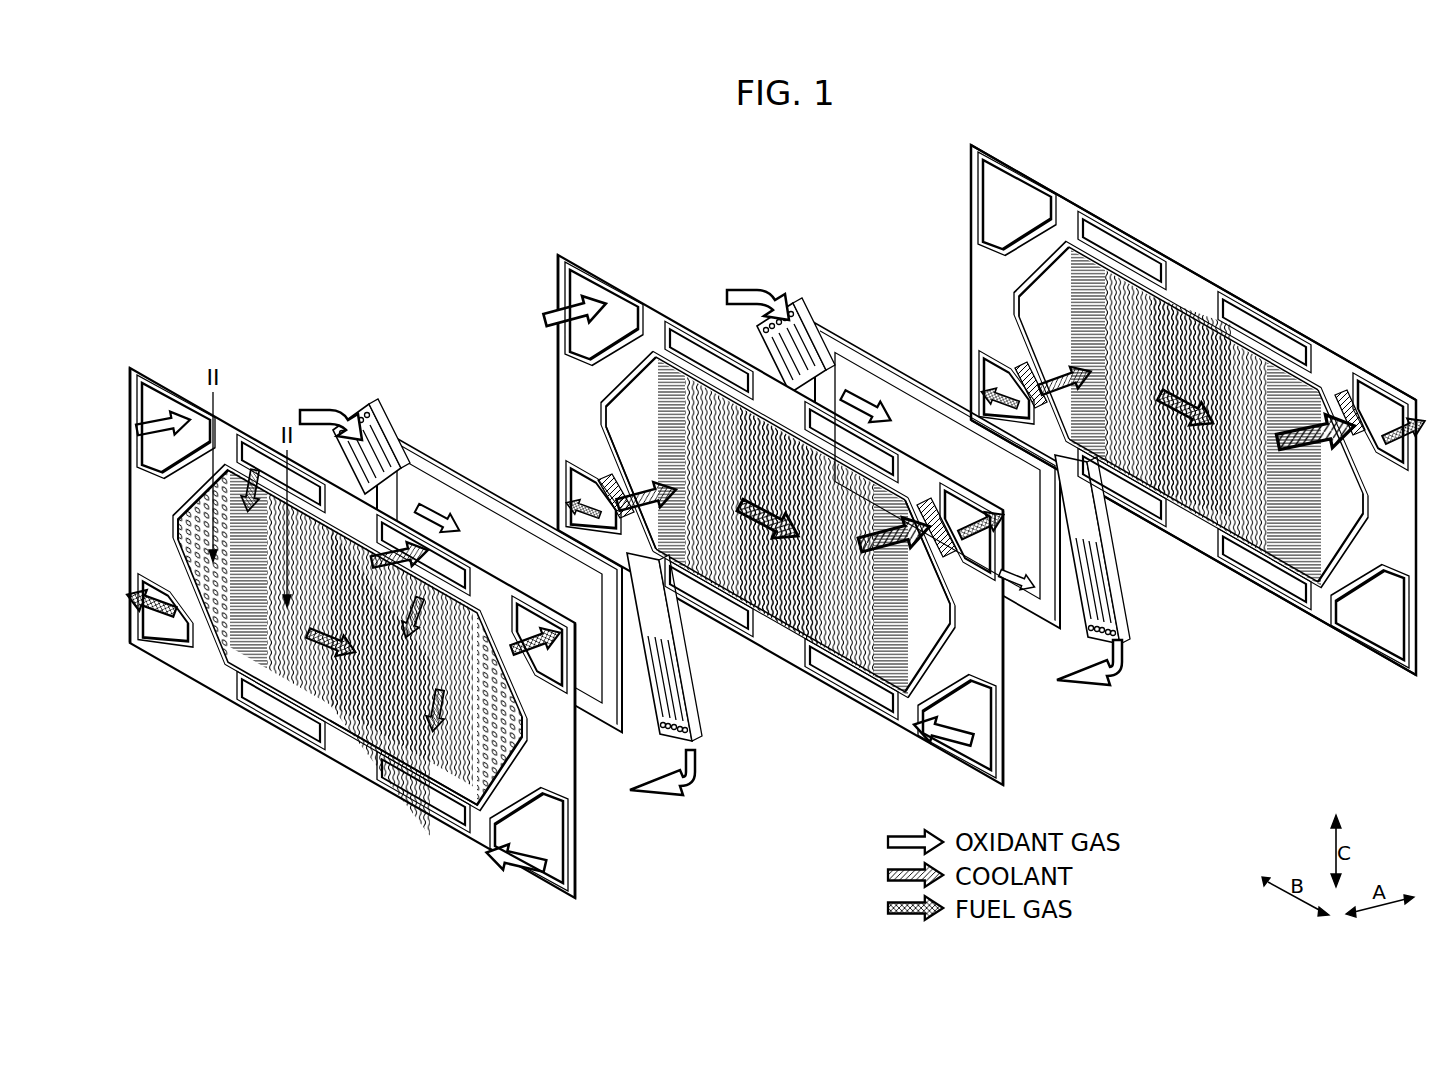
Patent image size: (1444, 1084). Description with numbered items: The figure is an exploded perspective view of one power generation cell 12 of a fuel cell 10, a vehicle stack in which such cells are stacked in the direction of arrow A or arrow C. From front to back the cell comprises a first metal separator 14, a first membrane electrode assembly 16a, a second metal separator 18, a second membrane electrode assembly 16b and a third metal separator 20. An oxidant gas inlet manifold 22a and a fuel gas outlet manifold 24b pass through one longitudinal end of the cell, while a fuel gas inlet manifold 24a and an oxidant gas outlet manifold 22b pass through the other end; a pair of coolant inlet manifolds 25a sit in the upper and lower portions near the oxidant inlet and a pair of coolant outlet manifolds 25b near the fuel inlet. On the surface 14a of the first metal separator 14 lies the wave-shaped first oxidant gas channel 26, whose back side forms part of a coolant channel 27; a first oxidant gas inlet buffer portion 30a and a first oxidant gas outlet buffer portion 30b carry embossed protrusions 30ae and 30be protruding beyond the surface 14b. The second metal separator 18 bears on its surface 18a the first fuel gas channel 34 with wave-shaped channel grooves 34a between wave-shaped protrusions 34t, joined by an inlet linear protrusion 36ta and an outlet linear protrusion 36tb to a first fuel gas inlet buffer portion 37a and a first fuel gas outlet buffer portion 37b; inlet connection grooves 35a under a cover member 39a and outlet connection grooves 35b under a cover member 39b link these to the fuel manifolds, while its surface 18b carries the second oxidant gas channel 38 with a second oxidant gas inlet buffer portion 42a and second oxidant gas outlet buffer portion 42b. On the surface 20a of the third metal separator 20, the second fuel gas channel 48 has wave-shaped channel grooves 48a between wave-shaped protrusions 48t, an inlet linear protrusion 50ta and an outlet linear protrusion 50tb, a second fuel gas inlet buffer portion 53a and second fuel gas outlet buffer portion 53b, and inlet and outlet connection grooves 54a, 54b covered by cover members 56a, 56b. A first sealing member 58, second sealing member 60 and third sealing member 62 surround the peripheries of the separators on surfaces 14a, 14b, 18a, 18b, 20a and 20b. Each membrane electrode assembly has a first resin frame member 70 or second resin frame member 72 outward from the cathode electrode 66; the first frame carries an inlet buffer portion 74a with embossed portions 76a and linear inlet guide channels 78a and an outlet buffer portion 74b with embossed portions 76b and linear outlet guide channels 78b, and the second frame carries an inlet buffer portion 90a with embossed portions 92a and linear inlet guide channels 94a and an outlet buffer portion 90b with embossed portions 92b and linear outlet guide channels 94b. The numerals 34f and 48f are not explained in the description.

The fuel cell 10 is at (352, 227).
The power generation cell 12 is at (318, 227).
The first metal separator 14 is at (136, 372).
The surface 14a is at (578, 835).
The surface 14b is at (578, 858).
The first membrane electrode assembly 16a is at (360, 400).
The second membrane electrode assembly 16b is at (790, 305).
The second metal separator 18 is at (556, 258).
The surface 18a is at (1004, 745).
The surface 18b is at (1004, 728).
The third metal separator 20 is at (968, 150).
The surface 20a is at (985, 258).
The surface 20b is at (968, 225).
The oxidant gas inlet manifold 22a is at (995, 196).
The oxidant gas outlet manifold 22b is at (555, 862).
The fuel gas inlet manifold 24a is at (545, 650).
The fuel gas outlet manifold 24b is at (162, 640).
The coolant inlet manifolds 25a is at (282, 780).
The coolant outlet manifolds 25b is at (400, 800).
The first oxidant gas channel 26 is at (370, 700).
The coolant channel 27 is at (348, 700).
The first oxidant gas inlet buffer portion 30a is at (205, 650).
The embossed protrusions 30ae is at (215, 625).
The first oxidant gas outlet buffer portion 30b is at (488, 712).
The embossed protrusions 30be is at (455, 790).
The first fuel gas channel 34 is at (792, 580).
The wave-shaped channel grooves 34a is at (742, 650).
The outlet buffer of fuel gas flow field 34f is at (855, 665).
The wave-shaped protrusions 34t is at (876, 650).
The inlet connection grooves 35a is at (950, 520).
The outlet connection grooves 35b is at (598, 530).
The inlet linear protrusion 36ta is at (930, 625).
The outlet linear protrusion 36tb is at (662, 452).
The first fuel gas inlet buffer portion 37a is at (918, 700).
The first fuel gas outlet buffer portion 37b is at (650, 422).
The second oxidant gas channel 38 is at (800, 610).
The cover member 39a is at (914, 510).
The cover member 39b is at (648, 565).
The second oxidant gas inlet buffer portion 42a is at (600, 392).
The second oxidant gas outlet buffer portion 42b is at (975, 645).
The second fuel gas channel 48 is at (1185, 490).
The wave-shaped channel grooves 48a is at (1170, 505).
The outlet buffer 48f is at (1245, 520).
The wave-shaped protrusions 48t is at (1133, 485).
The inlet linear protrusion 50ta is at (1303, 550).
The outlet linear protrusion 50tb is at (1076, 258).
The second fuel gas inlet buffer portion 53a is at (1330, 560).
The second fuel gas outlet buffer portion 53b is at (1047, 298).
The inlet connection grooves 54a is at (1358, 360).
The outlet connection grooves 54b is at (1010, 355).
The cover member 56a is at (1347, 390).
The cover member 56b is at (1020, 368).
The first sealing member 58 is at (478, 865).
The second sealing member 60 is at (952, 765).
The third sealing member 62 is at (1365, 660).
The cathode electrode 66 is at (432, 478).
The first resin frame member 70 is at (705, 742).
The second resin frame member 72 is at (1128, 640).
The inlet buffer portion 74a is at (372, 400).
The outlet buffer portion 74b is at (703, 742).
The embossed portions 76a is at (310, 408).
The embossed portions 76b is at (690, 800).
The linear inlet guide channels 78a is at (392, 418).
The linear outlet guide channels 78b is at (665, 730).
The inlet buffer portion 90a is at (800, 303).
The outlet buffer portion 90b is at (1083, 650).
The embossed portions 92a is at (765, 330).
The embossed portions 92b is at (1125, 655).
The linear inlet guide channels 94a is at (792, 330).
The linear outlet guide channels 94b is at (1102, 605).